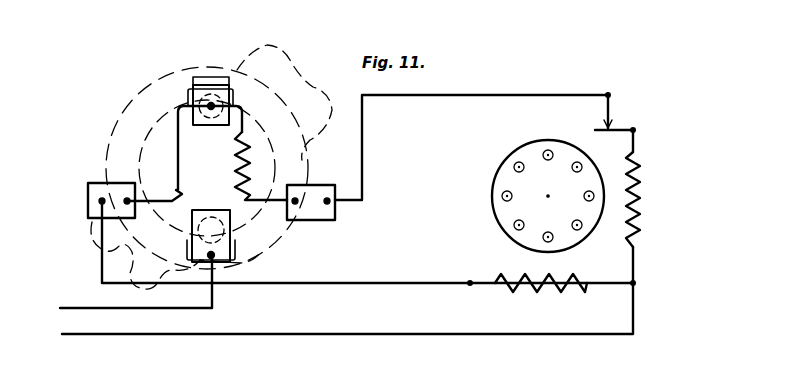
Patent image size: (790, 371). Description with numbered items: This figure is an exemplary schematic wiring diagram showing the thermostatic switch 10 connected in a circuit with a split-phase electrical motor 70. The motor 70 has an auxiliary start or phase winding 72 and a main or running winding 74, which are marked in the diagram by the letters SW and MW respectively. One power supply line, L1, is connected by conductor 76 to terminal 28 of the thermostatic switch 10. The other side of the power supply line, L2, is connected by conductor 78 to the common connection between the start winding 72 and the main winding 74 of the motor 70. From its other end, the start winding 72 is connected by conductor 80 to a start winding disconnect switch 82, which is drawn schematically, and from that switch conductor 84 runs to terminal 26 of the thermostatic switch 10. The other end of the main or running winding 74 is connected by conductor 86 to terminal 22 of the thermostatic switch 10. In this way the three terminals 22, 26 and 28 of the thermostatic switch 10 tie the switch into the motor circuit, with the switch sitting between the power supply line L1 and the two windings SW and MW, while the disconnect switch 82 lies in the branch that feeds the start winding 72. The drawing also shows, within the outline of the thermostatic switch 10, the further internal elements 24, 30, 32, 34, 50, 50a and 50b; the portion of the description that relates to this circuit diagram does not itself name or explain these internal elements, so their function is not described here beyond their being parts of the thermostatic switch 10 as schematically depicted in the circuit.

The thermostatic switch 10 is at (140, 100).
The terminal 22 is at (100, 186).
The bimetal element 24 is at (205, 80).
The terminal 26 is at (317, 188).
The terminal 28 is at (230, 256).
The contact 30 is at (213, 97).
The contact 32 is at (192, 236).
The housing 34 is at (152, 158).
The heater coil 50 is at (240, 136).
The heater coil portion 50a is at (178, 162).
The heater coil portion 50b is at (236, 190).
The motor 70 is at (487, 190).
The start winding 72 is at (640, 228).
The main winding 74 is at (538, 305).
The conductor 76 is at (216, 301).
The conductor 78 is at (220, 338).
The conductor 80 is at (640, 150).
The start winding disconnect switch 82 is at (600, 126).
The conductor 84 is at (465, 96).
The conductor 86 is at (412, 282).
The power supply line L1 is at (72, 308).
The power supply line L2 is at (74, 336).
The start winding SW is at (642, 200).
The main winding MW is at (510, 292).